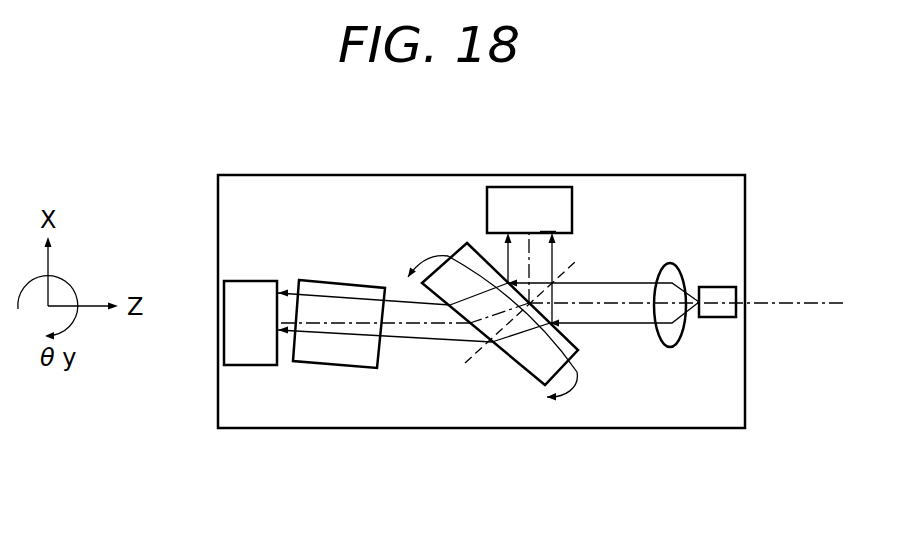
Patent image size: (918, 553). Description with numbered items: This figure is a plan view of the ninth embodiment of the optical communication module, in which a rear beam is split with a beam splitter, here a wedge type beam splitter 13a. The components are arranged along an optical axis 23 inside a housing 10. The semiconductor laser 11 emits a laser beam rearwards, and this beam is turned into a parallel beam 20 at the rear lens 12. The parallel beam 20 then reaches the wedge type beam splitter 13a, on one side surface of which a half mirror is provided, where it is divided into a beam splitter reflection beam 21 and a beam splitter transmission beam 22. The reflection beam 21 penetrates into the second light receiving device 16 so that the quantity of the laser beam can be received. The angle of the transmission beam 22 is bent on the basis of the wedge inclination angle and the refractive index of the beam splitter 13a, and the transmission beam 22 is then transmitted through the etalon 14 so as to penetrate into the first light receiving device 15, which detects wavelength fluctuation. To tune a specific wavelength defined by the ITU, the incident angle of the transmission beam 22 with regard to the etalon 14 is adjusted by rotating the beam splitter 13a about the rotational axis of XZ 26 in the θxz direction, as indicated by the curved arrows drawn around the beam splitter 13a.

The housing 10 is at (256, 413).
The semiconductor laser 11 is at (716, 287).
The rear lens 12 is at (670, 263).
The wedge type beam splitter 13a is at (460, 252).
The etalon 14 is at (342, 283).
The first light receiving device 15 is at (252, 281).
The light receiving element 16 is at (487, 187).
The parallel beam 20 is at (620, 325).
The beam splitter reflection beam 21 is at (548, 232).
The beam splitter transmission beam 22 is at (397, 338).
The optical axis 23 is at (627, 303).
The rotational axis of XZ 26 is at (478, 352).